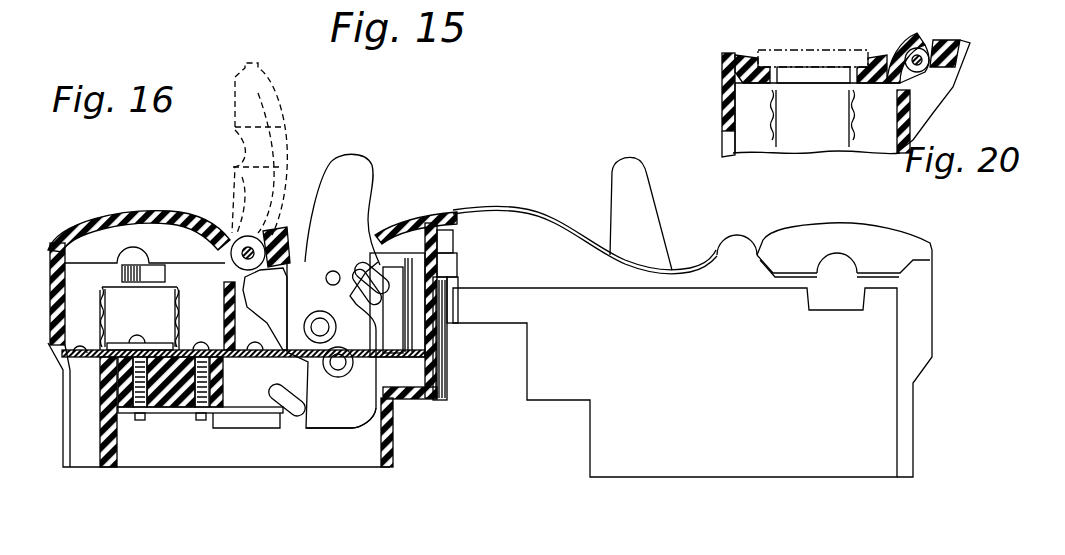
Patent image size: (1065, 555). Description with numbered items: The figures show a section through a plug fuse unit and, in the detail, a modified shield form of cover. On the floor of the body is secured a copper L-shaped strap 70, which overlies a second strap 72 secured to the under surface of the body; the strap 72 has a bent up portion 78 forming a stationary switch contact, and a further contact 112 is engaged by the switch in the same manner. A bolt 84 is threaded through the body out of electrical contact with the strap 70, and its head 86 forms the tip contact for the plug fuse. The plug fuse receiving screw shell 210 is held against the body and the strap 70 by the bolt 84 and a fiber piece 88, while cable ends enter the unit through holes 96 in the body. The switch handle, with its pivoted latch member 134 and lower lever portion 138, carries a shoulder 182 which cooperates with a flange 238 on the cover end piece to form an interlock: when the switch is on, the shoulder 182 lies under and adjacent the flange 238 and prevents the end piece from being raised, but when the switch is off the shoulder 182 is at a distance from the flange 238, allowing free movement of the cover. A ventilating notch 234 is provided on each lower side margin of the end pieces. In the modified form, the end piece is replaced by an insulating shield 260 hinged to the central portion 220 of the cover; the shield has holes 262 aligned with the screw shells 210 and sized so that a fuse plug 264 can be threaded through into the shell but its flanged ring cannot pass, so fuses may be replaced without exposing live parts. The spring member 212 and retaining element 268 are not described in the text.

In FIG. 16, the L-shaped strap 70 is at (94, 358).
In FIG. 16, the second strap 72 is at (248, 428).
In FIG. 16, the bent up portion 78 is at (272, 391).
In FIG. 16, the bolt 84 is at (140, 421).
In FIG. 16, the head 86 is at (136, 341).
In FIG. 16, the fiber piece 88 is at (170, 346).
In FIG. 16, the holes 96 is at (253, 339).
In FIG. 16, the roller pin 112 is at (375, 262).
In FIG. 16, the latch lever 134 is at (332, 345).
In FIG. 16, the latch lever lower portion 138 is at (300, 385).
In FIG. 16, the shoulder 182 is at (255, 309).
In FIG. 16, the screw shell 210 is at (100, 294).
In FIG. 20, the screw shell 210 is at (772, 140).
In FIG. 16, the spring 212 is at (100, 331).
In FIG. 16, the central portion 220 is at (522, 216).
In FIG. 16, the ventilating notch 234 is at (850, 267).
In FIG. 16, the flange 238 is at (297, 228).
In FIG. 20, the insulating shield 260 is at (753, 88).
In FIG. 20, the holes 262 is at (858, 72).
In FIG. 20, the fuse plug 264 is at (830, 75).
In FIG. 20, the cover strip 268 is at (770, 50).